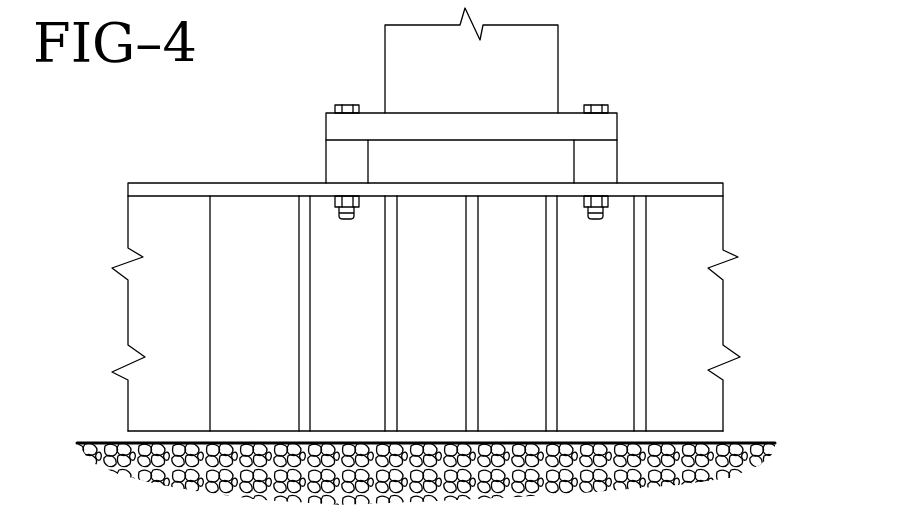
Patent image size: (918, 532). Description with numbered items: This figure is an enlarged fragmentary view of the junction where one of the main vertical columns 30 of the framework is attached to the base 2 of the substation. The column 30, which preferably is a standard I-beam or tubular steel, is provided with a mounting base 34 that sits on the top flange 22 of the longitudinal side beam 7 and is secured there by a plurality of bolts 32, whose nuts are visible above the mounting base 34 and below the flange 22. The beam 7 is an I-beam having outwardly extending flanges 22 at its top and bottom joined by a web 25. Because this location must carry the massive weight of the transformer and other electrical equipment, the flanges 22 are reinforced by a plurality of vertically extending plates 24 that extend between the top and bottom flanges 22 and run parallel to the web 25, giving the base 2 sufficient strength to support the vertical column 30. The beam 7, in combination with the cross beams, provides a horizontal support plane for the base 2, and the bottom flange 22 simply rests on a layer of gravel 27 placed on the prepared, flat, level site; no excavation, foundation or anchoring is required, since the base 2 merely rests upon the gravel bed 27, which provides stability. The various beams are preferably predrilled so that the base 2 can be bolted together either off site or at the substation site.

The base 2 is at (480, 279).
The longitudinal side beam 7 is at (465, 279).
The flange 22 is at (684, 185).
The vertically extending plate 24 is at (299, 323).
The web 25 is at (744, 234).
The layer of gravel 27 is at (746, 442).
The main vertical column 30 is at (397, 43).
The bolt 32 is at (346, 104).
The mounting base 34 is at (332, 126).